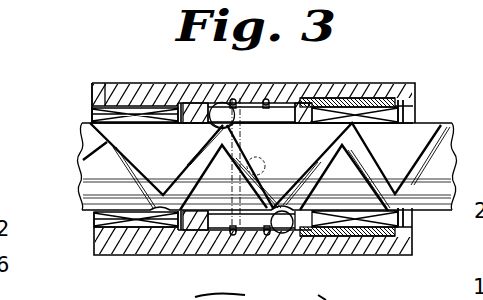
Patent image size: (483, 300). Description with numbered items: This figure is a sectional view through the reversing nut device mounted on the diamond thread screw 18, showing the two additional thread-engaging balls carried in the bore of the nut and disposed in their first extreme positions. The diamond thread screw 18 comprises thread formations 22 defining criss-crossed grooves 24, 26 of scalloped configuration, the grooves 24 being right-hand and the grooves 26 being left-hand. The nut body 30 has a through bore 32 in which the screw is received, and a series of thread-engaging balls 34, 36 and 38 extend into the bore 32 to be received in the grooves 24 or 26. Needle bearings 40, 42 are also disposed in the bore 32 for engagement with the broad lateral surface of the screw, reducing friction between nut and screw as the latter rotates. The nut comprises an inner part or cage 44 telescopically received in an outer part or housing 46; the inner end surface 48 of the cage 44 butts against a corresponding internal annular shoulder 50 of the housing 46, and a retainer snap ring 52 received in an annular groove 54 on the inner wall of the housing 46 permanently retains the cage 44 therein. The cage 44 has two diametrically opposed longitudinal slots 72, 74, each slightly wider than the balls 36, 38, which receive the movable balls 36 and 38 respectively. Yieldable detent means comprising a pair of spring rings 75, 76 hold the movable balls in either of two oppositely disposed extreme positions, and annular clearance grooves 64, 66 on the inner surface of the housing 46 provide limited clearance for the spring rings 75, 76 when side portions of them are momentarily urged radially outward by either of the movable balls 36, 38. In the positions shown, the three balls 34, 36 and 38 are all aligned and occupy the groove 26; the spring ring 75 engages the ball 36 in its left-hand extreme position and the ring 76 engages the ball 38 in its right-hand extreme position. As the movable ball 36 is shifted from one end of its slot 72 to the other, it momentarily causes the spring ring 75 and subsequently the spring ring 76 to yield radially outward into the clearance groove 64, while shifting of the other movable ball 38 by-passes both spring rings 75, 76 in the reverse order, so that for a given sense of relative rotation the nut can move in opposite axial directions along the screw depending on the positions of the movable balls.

The diamond thread screw 18 is at (428, 210).
The thread formations 22 is at (150, 137).
The right-hand grooves 24 is at (128, 167).
The left-hand grooves 26 is at (193, 163).
The nut body 30 is at (349, 78).
The through bore 32 is at (192, 235).
The thread-engaging ball 34 is at (246, 162).
The movable thread-engaging ball 36 is at (211, 127).
The movable thread-engaging ball 38 is at (279, 238).
The needle bearing 40 is at (112, 113).
The needle bearing 42 is at (386, 97).
The cage 44 is at (380, 84).
The housing 46 is at (110, 97).
The inner end surface 48 is at (186, 103).
The internal annular shoulder 50 is at (170, 256).
The retainer snap ring 52 is at (421, 99).
The annular groove 54 is at (431, 99).
The annular clearance groove 64 is at (237, 99).
The annular clearance groove 66 is at (267, 99).
The longitudinal slot 72 is at (243, 100).
The longitudinal slot 74 is at (250, 240).
The spring ring 75 is at (214, 99).
The spring ring 76 is at (280, 100).